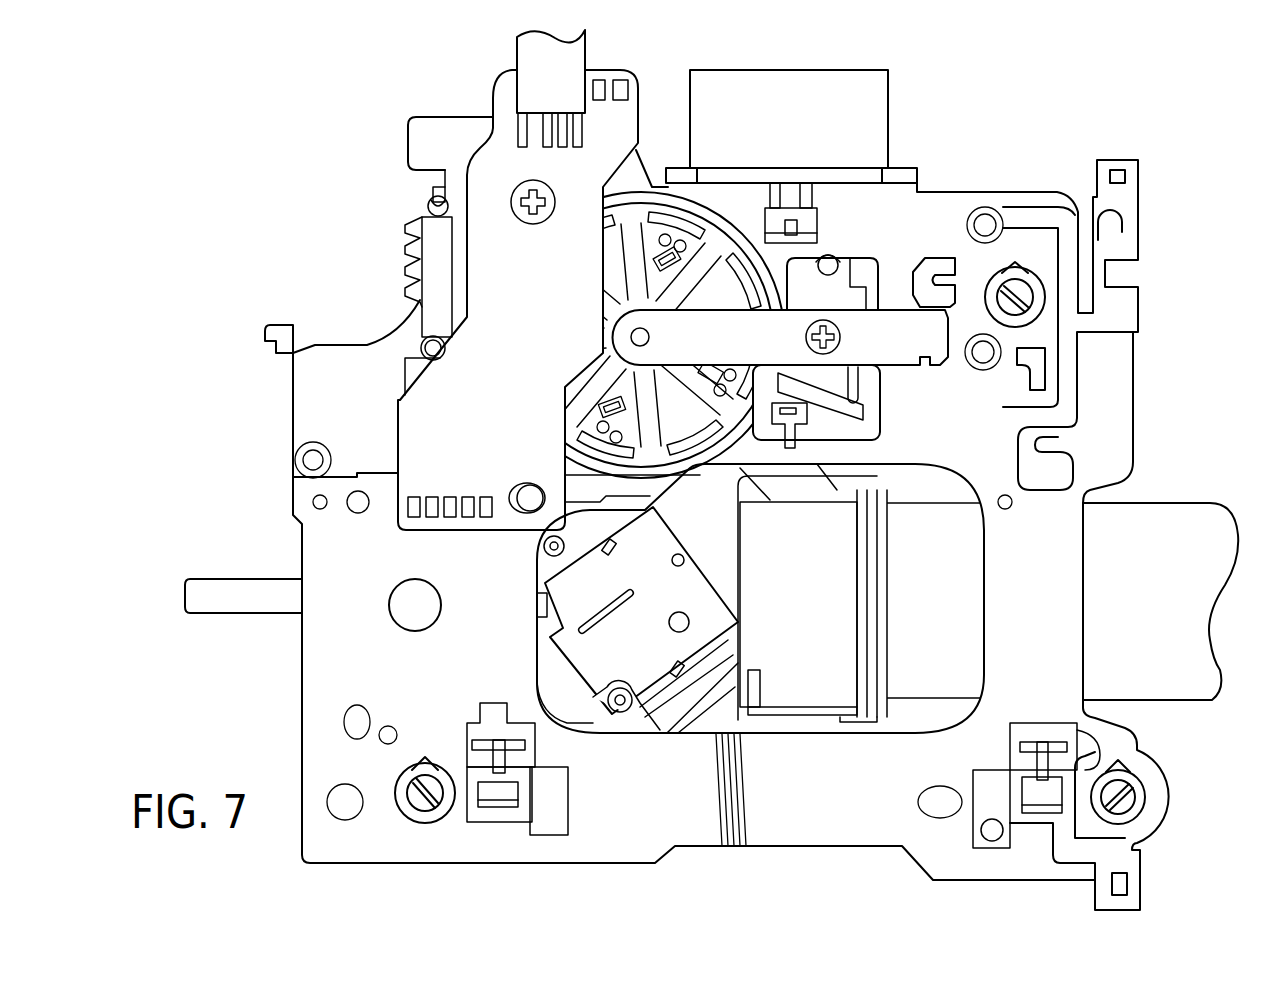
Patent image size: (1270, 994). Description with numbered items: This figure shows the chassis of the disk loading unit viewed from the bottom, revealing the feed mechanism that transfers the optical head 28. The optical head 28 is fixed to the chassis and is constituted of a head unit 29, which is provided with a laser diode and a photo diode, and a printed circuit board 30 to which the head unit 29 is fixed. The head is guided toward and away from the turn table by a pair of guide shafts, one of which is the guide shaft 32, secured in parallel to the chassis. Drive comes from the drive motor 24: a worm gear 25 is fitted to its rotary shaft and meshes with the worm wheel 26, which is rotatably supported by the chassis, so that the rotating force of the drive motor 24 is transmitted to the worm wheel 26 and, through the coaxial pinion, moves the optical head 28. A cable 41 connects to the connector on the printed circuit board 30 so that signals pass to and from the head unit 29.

The drive motor 24 is at (866, 90).
The worm gear 25 is at (771, 260).
The worm wheel 26 is at (610, 268).
The optical head 28 is at (742, 528).
The head unit 29 is at (742, 640).
The printed circuit board 30 is at (726, 577).
The guide shaft 32 is at (500, 793).
The cable 41 is at (1171, 507).